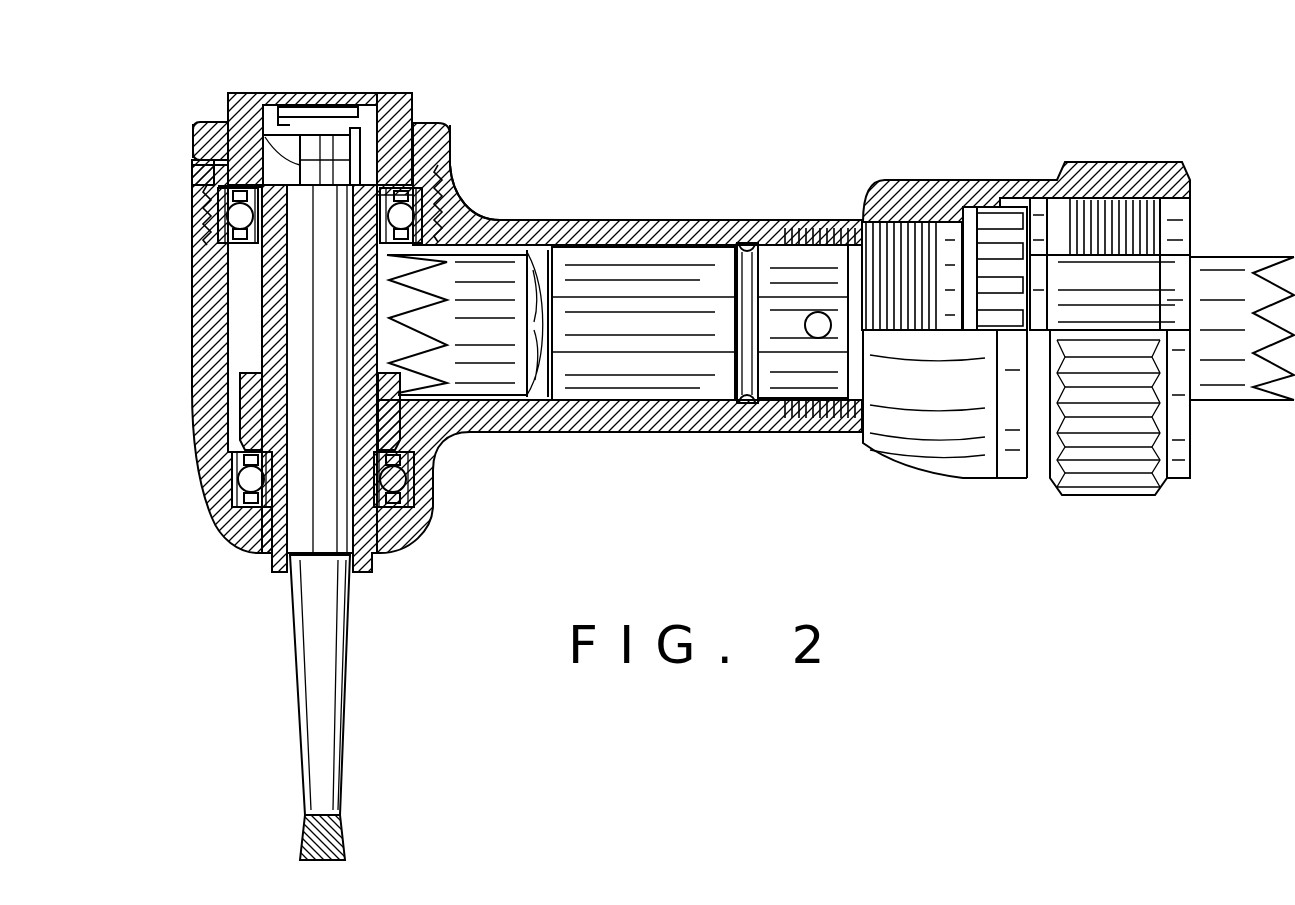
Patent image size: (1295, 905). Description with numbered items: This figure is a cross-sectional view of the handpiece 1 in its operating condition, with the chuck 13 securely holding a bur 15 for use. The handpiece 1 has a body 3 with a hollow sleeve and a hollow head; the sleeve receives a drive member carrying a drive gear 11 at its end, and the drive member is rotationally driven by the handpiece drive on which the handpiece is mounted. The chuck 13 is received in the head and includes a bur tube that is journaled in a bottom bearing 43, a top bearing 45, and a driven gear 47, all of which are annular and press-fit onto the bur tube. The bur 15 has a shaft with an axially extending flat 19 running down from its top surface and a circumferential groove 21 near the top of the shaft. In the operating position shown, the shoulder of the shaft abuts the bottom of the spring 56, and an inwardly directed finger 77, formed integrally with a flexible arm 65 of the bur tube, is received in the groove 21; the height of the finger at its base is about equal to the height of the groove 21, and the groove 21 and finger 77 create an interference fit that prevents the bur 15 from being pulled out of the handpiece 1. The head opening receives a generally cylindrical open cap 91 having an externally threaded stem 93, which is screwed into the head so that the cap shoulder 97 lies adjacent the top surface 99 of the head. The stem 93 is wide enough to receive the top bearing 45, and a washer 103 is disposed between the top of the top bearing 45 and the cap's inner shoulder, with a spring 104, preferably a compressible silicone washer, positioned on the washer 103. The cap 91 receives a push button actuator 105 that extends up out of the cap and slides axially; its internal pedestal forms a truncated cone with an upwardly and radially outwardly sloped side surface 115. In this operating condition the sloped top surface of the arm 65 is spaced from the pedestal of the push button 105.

The handpiece 1 is at (622, 148).
The body 3 is at (700, 215).
The drive gear 11 is at (500, 350).
The chuck 13 is at (248, 306).
The bur 15 is at (288, 602).
The flat 19 is at (290, 168).
The groove 21 is at (452, 195).
The bottom bearing 43 is at (232, 470).
The top bearing 45 is at (225, 265).
The driven gear 47 is at (245, 412).
The spring 56 is at (350, 150).
The arm 65 is at (425, 122).
The finger 77 is at (352, 172).
The cap 91 is at (194, 118).
The stem 93 is at (198, 207).
The cap shoulder 97 is at (449, 160).
The top surface of the head 99 is at (452, 182).
The washer 103 is at (196, 164).
The spring 104 is at (192, 132).
The push button actuator 105 is at (348, 82).
The sloped side surface 115 is at (422, 110).